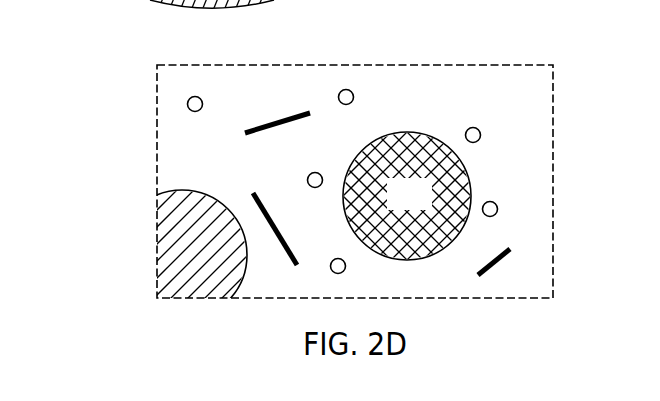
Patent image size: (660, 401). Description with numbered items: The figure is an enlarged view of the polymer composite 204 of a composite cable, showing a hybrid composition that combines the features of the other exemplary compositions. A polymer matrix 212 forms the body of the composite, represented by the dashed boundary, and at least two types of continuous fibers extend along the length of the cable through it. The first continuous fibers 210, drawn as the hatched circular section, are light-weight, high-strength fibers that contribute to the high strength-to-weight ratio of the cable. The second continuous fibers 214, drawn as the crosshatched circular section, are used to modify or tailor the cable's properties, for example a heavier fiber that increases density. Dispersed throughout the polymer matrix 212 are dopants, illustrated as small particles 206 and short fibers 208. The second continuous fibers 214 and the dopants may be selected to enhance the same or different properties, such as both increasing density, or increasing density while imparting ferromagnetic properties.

The polymer composite 204 is at (470, 39).
The particles 206 is at (188, 104).
The fibers 208 is at (510, 254).
The first continuous fibers 210 is at (158, 245).
The polymer matrix 212 is at (472, 107).
The second continuous fibers 214 is at (427, 207).